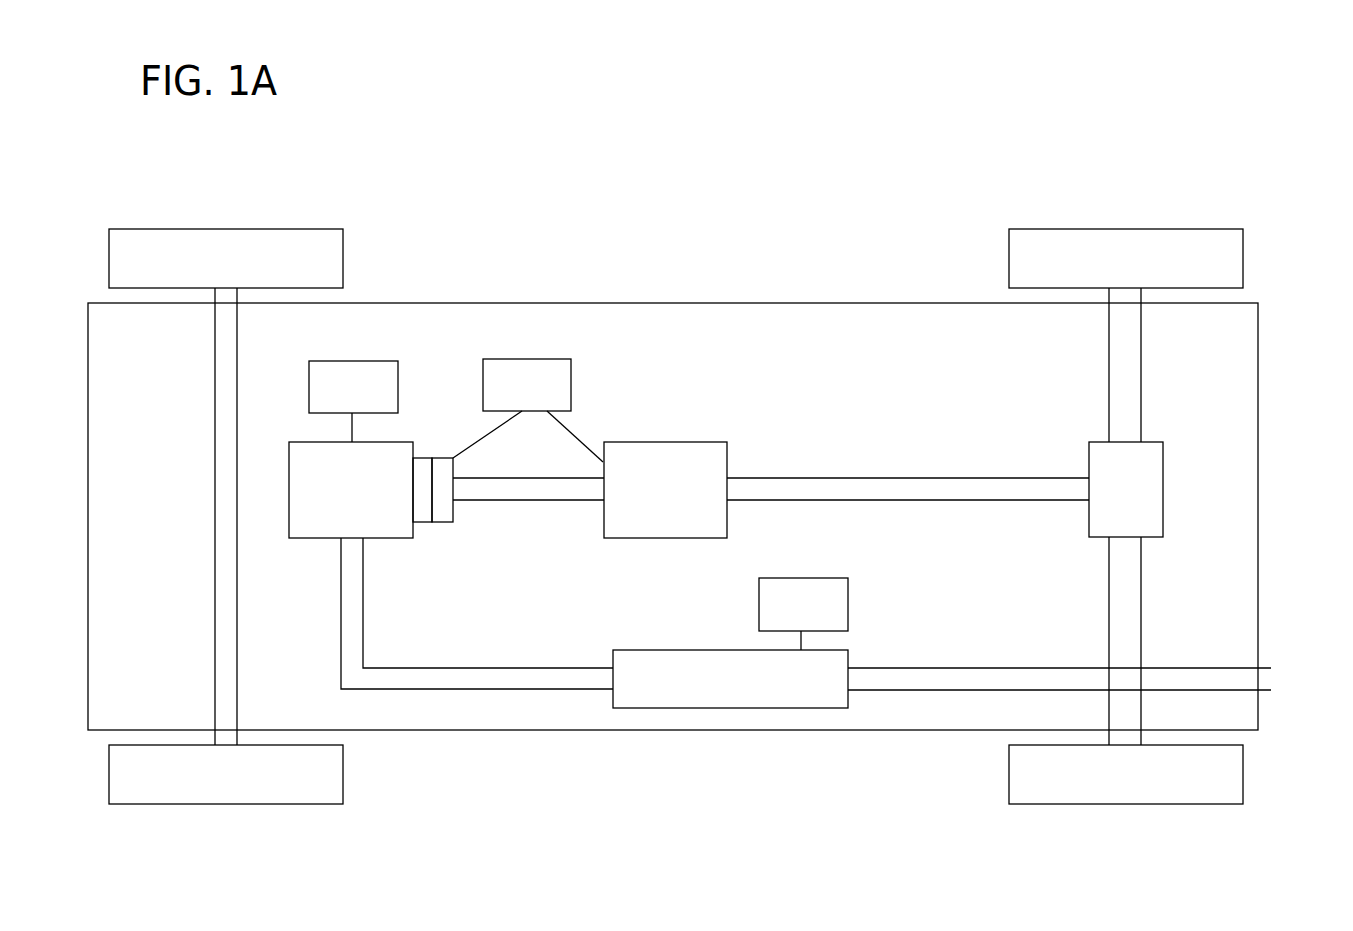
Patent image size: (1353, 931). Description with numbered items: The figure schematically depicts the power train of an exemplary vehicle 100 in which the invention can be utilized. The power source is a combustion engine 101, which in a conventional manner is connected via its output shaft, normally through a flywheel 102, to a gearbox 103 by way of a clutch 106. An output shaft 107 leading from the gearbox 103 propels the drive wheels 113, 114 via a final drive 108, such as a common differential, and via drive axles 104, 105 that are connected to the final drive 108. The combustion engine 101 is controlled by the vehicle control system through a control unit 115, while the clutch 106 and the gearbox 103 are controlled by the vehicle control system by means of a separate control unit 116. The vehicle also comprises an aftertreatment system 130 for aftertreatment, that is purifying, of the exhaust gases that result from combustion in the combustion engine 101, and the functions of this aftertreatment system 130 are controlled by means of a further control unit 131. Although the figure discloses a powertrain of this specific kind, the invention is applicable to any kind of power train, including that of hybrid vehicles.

The vehicle 100 is at (577, 135).
The combustion engine 101 is at (323, 528).
The flywheel 102 is at (422, 522).
The clutch 106 is at (441, 522).
The gearbox 103 is at (665, 453).
The drive axle 104 is at (1130, 364).
The drive axle 105 is at (1137, 650).
The output shaft 107 is at (1005, 500).
The final drive 108 is at (1157, 485).
The drive wheel 113 is at (1237, 252).
The drive wheel 114 is at (1237, 781).
The control unit 115 is at (353, 397).
The control unit 116 is at (548, 398).
The aftertreatment system 130 is at (715, 662).
The control unit 131 is at (803, 613).